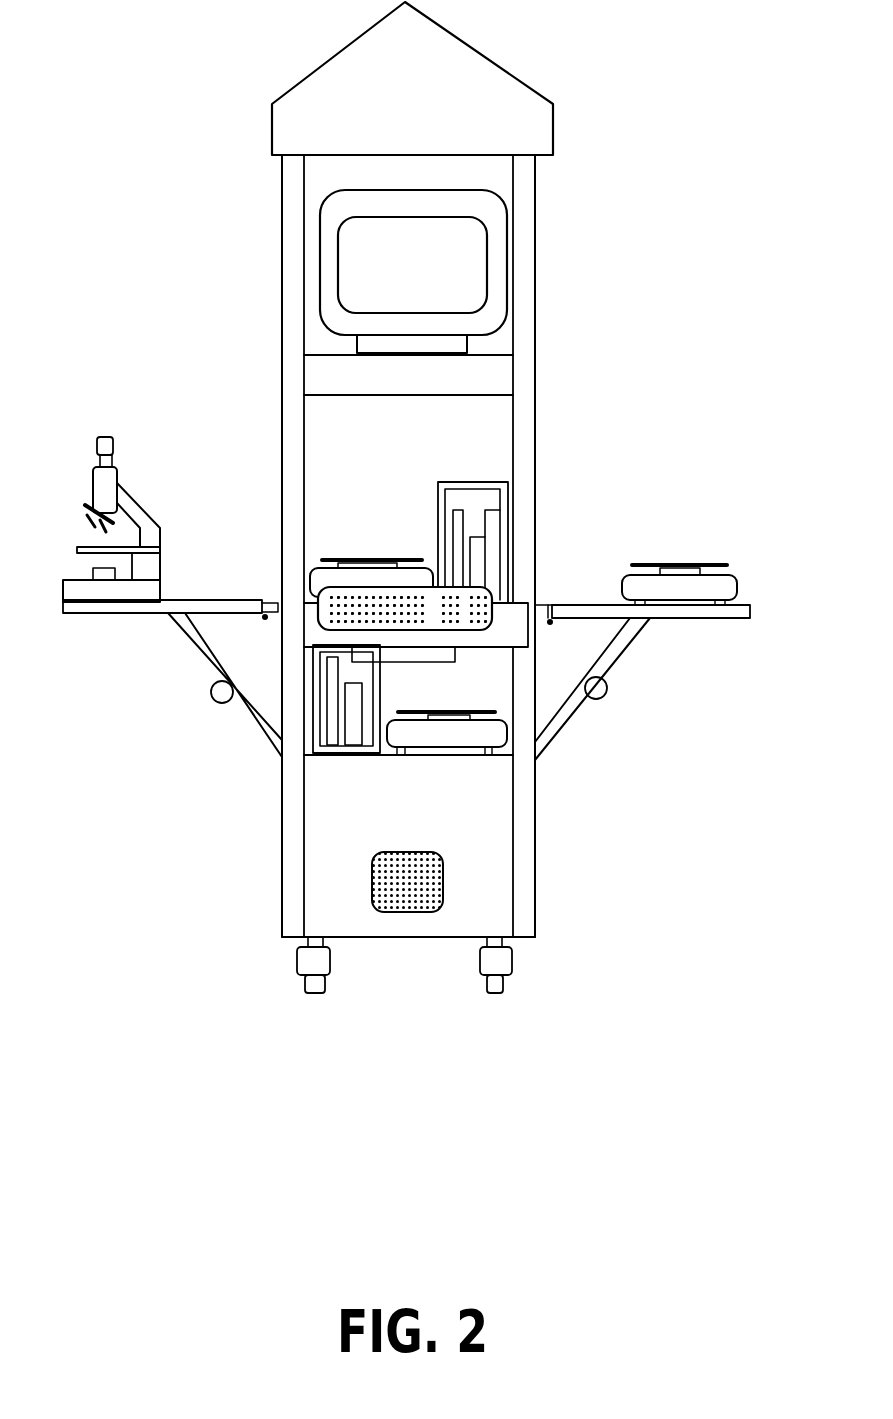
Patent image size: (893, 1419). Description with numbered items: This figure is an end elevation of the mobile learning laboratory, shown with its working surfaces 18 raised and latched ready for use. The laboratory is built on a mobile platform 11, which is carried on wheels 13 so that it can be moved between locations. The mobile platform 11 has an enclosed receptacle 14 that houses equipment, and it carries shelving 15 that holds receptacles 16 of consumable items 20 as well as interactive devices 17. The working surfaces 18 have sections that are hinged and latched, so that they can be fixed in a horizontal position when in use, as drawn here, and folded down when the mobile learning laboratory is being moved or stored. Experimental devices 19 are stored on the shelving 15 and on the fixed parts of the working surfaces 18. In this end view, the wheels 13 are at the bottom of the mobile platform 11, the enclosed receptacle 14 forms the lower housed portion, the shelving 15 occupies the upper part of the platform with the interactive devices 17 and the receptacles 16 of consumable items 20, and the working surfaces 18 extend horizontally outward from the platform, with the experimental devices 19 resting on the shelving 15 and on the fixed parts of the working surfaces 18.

The mobile platform 11 is at (412, 491).
The wheels 13 is at (427, 989).
The enclosed receptacle 14 is at (374, 833).
The shelving 15 is at (408, 394).
The receptacles 16 is at (312, 723).
The interactive devices 17 is at (413, 251).
The working surfaces 18 is at (357, 595).
The experimental devices 19 is at (447, 714).
The consumable items 20 is at (493, 564).